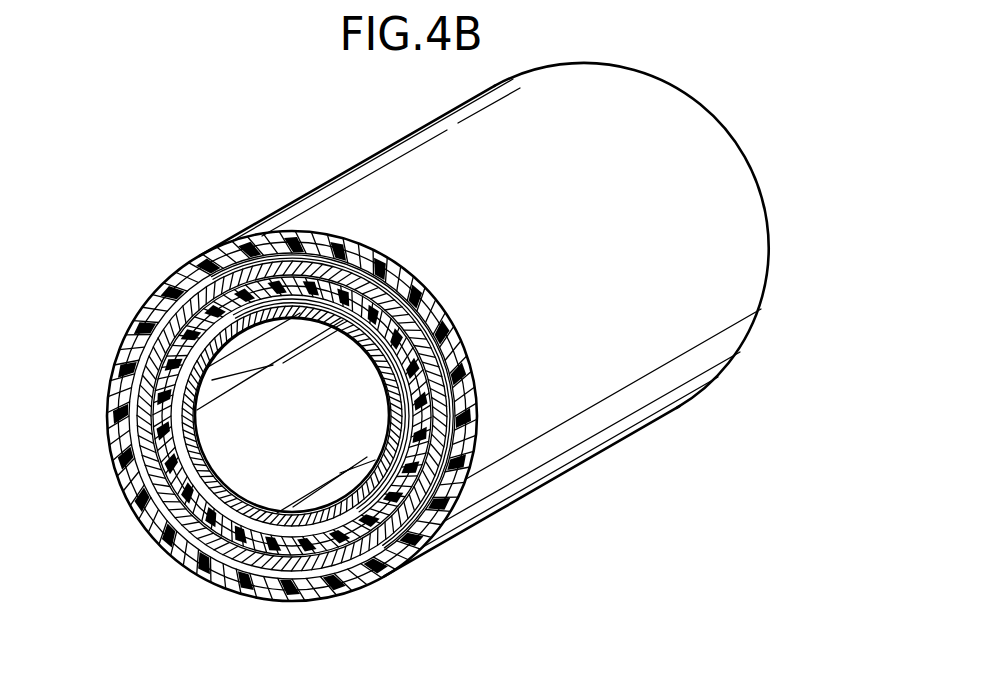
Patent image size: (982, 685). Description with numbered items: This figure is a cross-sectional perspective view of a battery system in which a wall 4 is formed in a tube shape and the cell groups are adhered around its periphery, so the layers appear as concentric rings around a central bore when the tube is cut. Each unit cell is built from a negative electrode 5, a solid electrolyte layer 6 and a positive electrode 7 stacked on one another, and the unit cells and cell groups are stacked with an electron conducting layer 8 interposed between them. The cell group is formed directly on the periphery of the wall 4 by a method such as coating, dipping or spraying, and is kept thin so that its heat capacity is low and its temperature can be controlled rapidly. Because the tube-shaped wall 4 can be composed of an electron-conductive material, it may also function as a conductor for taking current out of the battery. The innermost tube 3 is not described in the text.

The inner tube 3 is at (212, 413).
The wall 4 is at (148, 320).
The negative electrode 5 is at (436, 520).
The solid electrolyte layer 6 is at (170, 556).
The positive electrode 7 is at (462, 474).
The electron conducting layer 8 is at (384, 555).